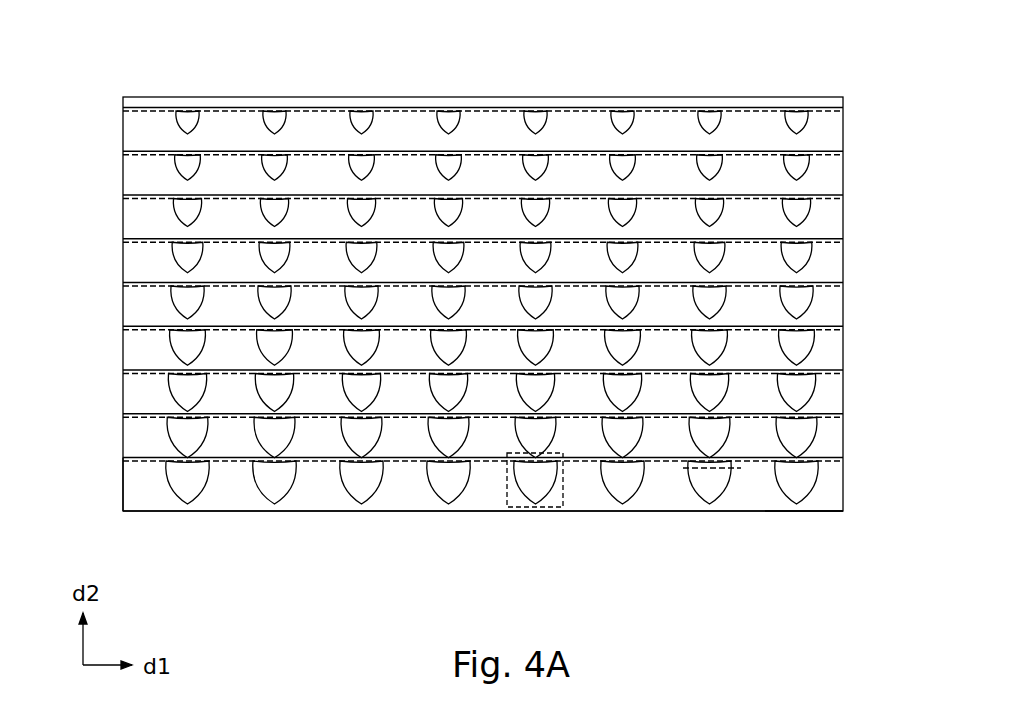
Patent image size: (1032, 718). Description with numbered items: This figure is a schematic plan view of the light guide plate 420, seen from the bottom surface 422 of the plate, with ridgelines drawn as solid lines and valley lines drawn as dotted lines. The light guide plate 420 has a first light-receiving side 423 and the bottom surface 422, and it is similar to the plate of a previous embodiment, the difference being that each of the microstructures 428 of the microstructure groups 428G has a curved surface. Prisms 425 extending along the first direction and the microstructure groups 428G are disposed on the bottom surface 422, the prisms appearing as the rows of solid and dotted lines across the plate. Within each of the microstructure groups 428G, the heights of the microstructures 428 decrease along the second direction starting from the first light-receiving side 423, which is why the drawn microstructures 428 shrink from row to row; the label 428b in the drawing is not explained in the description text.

The light guide plate 420 is at (70, 32).
The bottom surface 422 is at (232, 72).
The first light-receiving side 423 is at (407, 512).
The prisms 425 is at (123, 458).
The microstructures 428 is at (802, 293).
The microstructure bottom surface 428b is at (188, 207).
The microstructure groups 428G is at (799, 525).